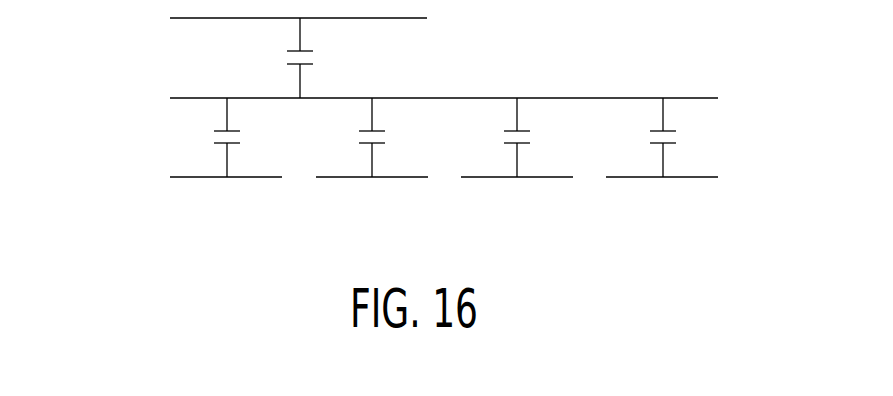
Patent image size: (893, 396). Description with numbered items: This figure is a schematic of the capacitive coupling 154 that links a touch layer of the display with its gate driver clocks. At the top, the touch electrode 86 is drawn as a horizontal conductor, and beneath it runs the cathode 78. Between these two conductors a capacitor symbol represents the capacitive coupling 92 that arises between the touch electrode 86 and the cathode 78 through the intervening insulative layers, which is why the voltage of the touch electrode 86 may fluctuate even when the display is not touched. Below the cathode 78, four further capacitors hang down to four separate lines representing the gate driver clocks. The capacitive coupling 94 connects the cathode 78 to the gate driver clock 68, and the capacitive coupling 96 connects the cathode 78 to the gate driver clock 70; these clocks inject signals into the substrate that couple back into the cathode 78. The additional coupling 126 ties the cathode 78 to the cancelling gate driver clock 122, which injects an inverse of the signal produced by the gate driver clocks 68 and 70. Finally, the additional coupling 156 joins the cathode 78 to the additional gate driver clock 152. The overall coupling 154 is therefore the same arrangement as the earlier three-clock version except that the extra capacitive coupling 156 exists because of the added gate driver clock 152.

The touch electrode 86 is at (282, 19).
The cathode 78 is at (428, 99).
The capacitive coupling 92 is at (287, 59).
The capacitive coupling 94 is at (215, 141).
The capacitive coupling 96 is at (384, 142).
The additional coupling 126 is at (527, 138).
The additional coupling 156 is at (672, 139).
The gate driver clock 68 is at (226, 192).
The gate driver clock 70 is at (372, 192).
The cancelling gate driver clock 122 is at (517, 192).
The additional gate driver clock 152 is at (662, 192).
The capacitive coupling 154 is at (92, 185).